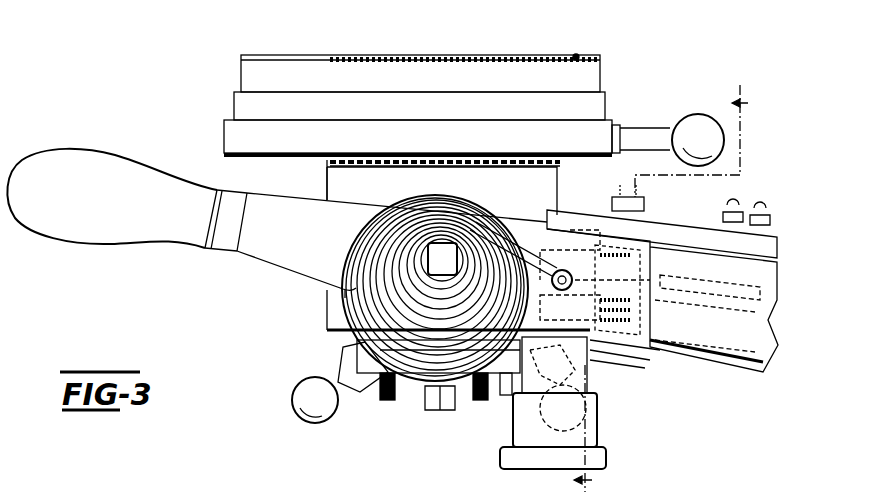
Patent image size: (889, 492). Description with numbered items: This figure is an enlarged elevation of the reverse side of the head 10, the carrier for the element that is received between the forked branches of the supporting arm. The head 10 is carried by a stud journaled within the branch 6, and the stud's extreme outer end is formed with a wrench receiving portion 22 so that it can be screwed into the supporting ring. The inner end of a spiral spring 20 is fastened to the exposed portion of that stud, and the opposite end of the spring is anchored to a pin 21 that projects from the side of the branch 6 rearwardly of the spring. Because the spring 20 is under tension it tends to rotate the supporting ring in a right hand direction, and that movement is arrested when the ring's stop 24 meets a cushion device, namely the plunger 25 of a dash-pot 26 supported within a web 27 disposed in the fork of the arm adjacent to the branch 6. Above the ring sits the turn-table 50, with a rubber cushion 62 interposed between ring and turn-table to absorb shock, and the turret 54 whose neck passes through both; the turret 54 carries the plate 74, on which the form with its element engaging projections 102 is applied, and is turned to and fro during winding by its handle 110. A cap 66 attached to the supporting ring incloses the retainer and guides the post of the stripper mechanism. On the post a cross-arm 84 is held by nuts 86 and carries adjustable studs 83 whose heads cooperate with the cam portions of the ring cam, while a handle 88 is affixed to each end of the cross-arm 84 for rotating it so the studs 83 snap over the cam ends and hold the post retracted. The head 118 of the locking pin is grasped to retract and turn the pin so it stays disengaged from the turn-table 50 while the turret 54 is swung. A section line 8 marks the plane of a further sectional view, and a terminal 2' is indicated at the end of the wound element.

The branch 6 is at (254, 244).
The section line 8— 8 is at (669, 286).
The head 10 is at (420, 56).
The spiral spring 20 is at (362, 249).
The pin 21 is at (617, 290).
The wrench receiving portion 22 is at (442, 259).
The stop 24 is at (573, 270).
The plunger 25 is at (652, 272).
The dash-pot 26 is at (583, 423).
The web 27 is at (652, 327).
The turn-table 50 is at (442, 191).
The turret 54 is at (230, 136).
The cushion 62 is at (327, 172).
The cap 66 is at (335, 316).
The plate 74 is at (235, 105).
The stud 83 is at (392, 402).
The cross-arm 84 is at (372, 373).
The nut 86 is at (428, 402).
The handle 88 is at (335, 406).
The element engaging projections 102 is at (484, 57).
The handle 110 is at (698, 140).
The head 118 is at (505, 397).
The reference point 2' is at (580, 48).